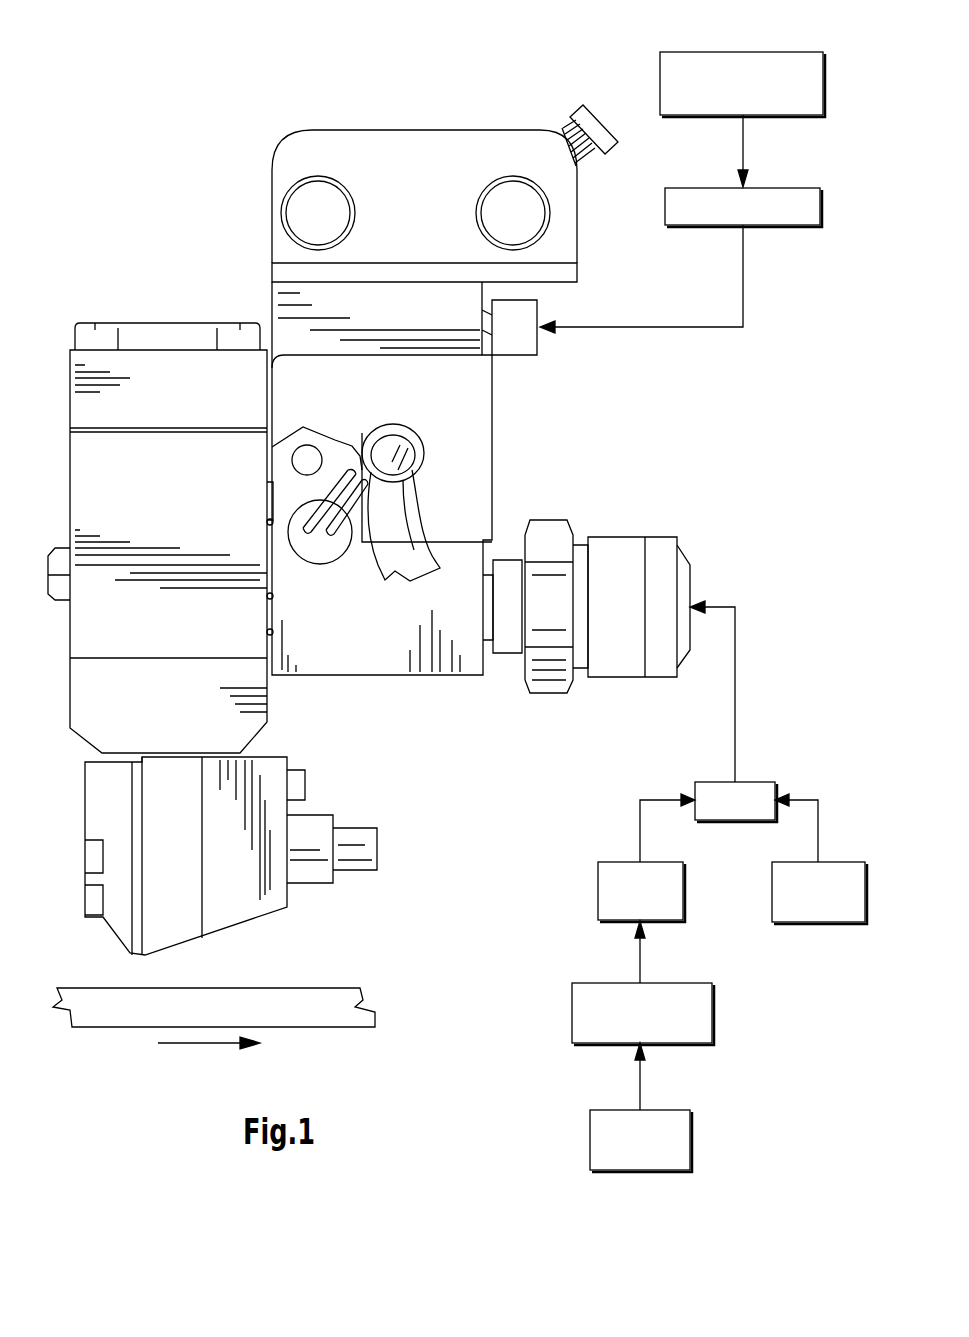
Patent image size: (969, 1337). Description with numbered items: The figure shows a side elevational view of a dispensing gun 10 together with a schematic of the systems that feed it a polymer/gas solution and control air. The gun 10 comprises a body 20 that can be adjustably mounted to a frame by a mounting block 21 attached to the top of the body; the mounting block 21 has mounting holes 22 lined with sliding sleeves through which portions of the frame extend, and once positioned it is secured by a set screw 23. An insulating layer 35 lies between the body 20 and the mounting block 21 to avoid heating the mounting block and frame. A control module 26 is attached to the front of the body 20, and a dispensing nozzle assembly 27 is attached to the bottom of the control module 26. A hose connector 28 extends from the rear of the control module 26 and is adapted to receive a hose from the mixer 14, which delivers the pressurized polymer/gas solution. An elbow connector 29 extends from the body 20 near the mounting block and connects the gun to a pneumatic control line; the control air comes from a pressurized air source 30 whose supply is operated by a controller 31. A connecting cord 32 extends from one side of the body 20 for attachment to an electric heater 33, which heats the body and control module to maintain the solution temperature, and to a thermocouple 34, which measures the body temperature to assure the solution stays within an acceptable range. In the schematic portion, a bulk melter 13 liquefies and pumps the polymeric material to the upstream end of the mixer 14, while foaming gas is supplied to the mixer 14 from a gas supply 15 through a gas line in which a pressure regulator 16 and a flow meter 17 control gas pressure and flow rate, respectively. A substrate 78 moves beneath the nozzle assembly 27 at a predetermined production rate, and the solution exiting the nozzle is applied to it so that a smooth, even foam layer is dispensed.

The dispensing gun 10 is at (228, 273).
The bulk melter 13 is at (828, 924).
The mixer 14 is at (741, 822).
The gas supply 15 is at (660, 1172).
The pressure regulator 16 is at (690, 1045).
The flow meter 17 is at (665, 921).
The body 20 is at (468, 436).
The mounting block 21 is at (312, 133).
The mounting holes 22 is at (318, 190).
The set screw 23 is at (567, 138).
The control module 26 is at (110, 487).
The dispensing nozzle assembly 27 is at (177, 930).
The hose connector 28 is at (625, 550).
The elbow connector 29 is at (515, 347).
The pressurized air source 30 is at (820, 52).
The controller 31 is at (820, 190).
The connecting cord 32 is at (388, 563).
The electric heater 33 is at (317, 557).
The thermocouple 34 is at (375, 855).
The insulating layer 35 is at (565, 272).
The substrate 78 is at (118, 1010).